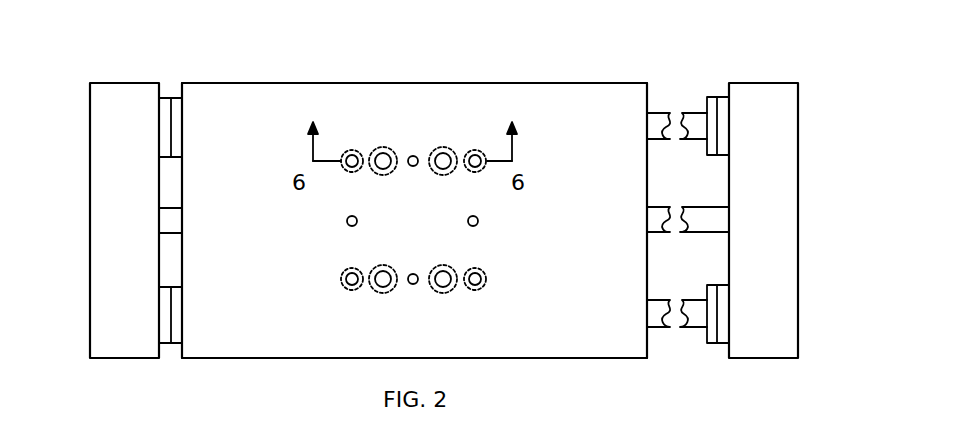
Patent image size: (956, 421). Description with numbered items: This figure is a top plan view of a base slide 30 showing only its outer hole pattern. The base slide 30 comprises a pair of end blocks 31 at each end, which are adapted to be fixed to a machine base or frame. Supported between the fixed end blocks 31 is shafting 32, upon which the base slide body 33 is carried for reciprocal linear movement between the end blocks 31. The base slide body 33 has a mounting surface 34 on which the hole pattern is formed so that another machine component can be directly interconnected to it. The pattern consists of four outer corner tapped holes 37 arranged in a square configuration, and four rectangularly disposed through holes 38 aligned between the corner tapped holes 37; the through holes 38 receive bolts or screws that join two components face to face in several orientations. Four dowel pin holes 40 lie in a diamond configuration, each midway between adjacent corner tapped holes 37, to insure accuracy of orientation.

The base slide 30 is at (577, 69).
The end blocks 31 is at (104, 215).
The shafting 32 is at (697, 118).
The base slide body 33 is at (248, 362).
The mounting surface 34 is at (218, 100).
The corner tapped holes 37 is at (352, 155).
The through holes 38 is at (383, 150).
The dowel pin holes 40 is at (413, 156).